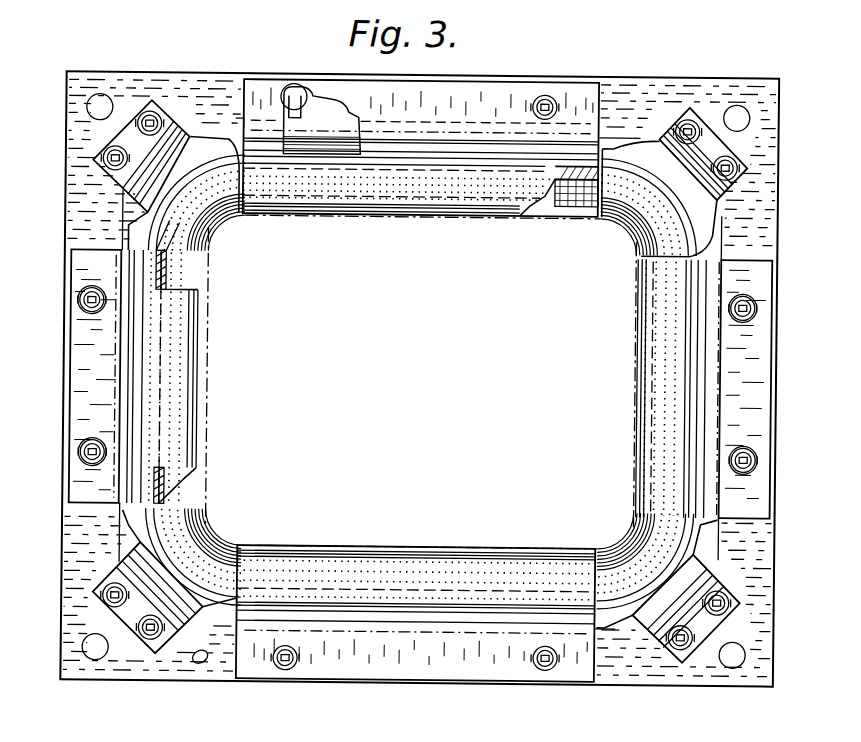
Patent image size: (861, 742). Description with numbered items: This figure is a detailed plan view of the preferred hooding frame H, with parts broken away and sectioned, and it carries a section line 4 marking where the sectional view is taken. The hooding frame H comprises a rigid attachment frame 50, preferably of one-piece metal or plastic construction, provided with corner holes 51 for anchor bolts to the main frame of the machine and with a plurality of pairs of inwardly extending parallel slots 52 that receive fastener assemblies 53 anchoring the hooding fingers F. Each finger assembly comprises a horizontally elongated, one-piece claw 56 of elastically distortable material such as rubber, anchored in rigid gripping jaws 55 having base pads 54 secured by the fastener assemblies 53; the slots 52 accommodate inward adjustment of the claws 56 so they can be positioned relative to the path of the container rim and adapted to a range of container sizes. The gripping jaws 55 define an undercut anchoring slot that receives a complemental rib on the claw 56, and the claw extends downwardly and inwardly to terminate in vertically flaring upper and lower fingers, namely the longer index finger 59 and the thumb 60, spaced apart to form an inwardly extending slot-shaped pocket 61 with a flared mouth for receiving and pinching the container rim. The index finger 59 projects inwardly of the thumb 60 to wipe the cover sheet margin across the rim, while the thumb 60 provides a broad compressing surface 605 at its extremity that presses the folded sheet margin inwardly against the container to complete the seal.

The attachment frame 50 is at (760, 565).
The corner holes 51 is at (734, 109).
The parallel slots 52 is at (288, 97).
The fastener assemblies 53 is at (81, 313).
The base pads 54 is at (157, 101).
The gripping jaws 55 is at (713, 359).
The claw 56 is at (351, 186).
The index finger 59 is at (399, 217).
The thumb 60 is at (585, 194).
The compressing surface 605 is at (199, 278).
The pocket 61 is at (184, 274).
The hooding frame H is at (466, 108).
The hooding fingers F is at (461, 216).
The section line 4- 4 is at (812, 305).